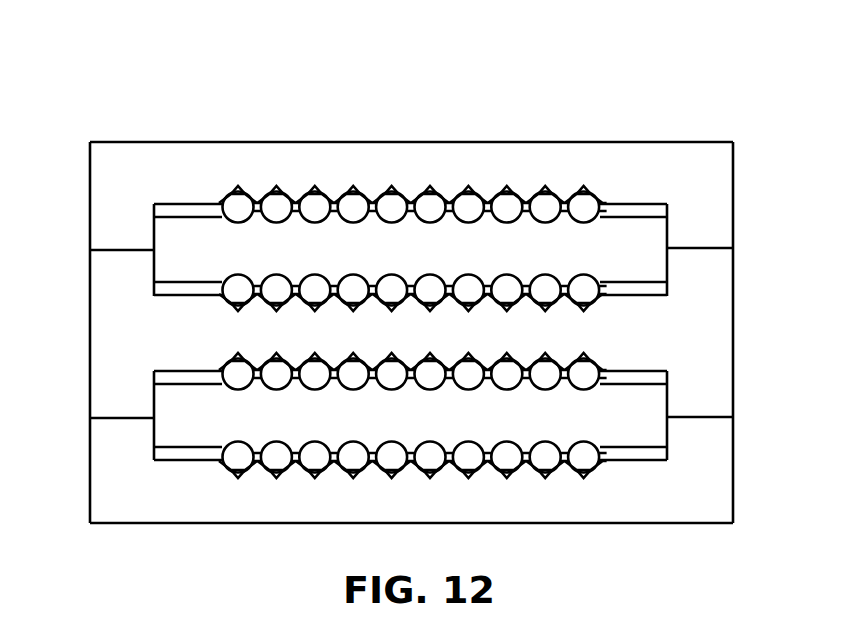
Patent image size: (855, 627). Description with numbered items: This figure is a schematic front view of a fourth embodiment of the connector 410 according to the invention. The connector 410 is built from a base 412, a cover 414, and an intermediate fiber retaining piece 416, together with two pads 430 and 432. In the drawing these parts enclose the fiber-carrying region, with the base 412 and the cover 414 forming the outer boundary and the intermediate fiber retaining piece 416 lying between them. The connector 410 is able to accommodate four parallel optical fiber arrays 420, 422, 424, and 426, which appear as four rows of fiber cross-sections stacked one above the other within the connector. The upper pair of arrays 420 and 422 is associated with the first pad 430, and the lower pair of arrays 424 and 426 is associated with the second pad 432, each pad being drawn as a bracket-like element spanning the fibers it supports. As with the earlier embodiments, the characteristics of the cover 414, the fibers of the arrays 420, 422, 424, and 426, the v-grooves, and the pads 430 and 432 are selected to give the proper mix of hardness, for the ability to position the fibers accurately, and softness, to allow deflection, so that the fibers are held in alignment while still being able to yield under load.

The connector 410 is at (403, 86).
The base 412 is at (715, 479).
The cover 414 is at (710, 172).
The intermediate fiber retaining piece 416 is at (698, 335).
The optical fiber array 420 is at (222, 205).
The optical fiber array 422 is at (228, 290).
The optical fiber array 424 is at (228, 373).
The optical fiber array 426 is at (228, 455).
The pad 430 is at (648, 248).
The pad 432 is at (655, 412).